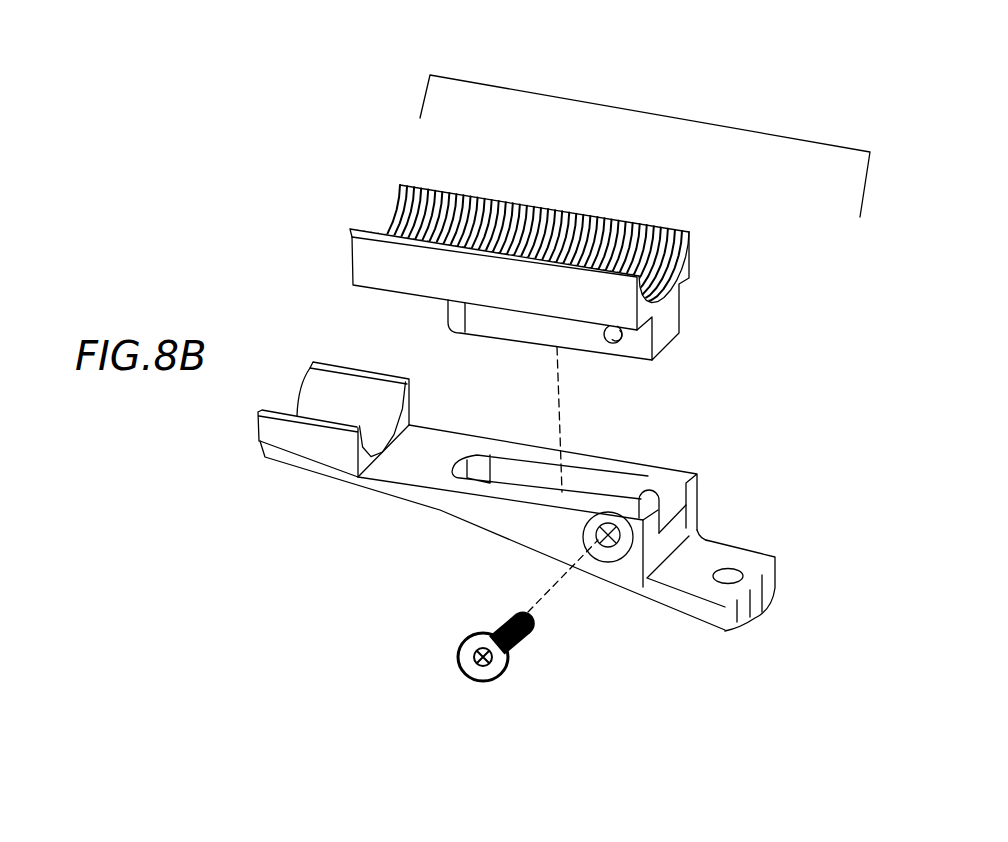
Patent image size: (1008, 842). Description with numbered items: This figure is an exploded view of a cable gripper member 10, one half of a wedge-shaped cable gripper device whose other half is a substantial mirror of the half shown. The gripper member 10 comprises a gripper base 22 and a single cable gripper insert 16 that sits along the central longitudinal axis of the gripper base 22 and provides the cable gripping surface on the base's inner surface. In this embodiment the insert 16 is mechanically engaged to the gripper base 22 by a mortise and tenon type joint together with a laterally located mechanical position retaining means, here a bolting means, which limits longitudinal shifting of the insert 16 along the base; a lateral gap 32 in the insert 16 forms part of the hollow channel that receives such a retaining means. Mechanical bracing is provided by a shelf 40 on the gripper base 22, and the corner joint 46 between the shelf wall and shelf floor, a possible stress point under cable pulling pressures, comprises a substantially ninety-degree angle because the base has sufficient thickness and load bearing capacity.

The cable gripper member 10 is at (632, 100).
The cable gripper insert 16 is at (686, 275).
The gripper base 22 is at (630, 575).
The lateral gap 32 is at (626, 354).
The shelf 40 is at (287, 433).
The corner joint 46 is at (377, 458).